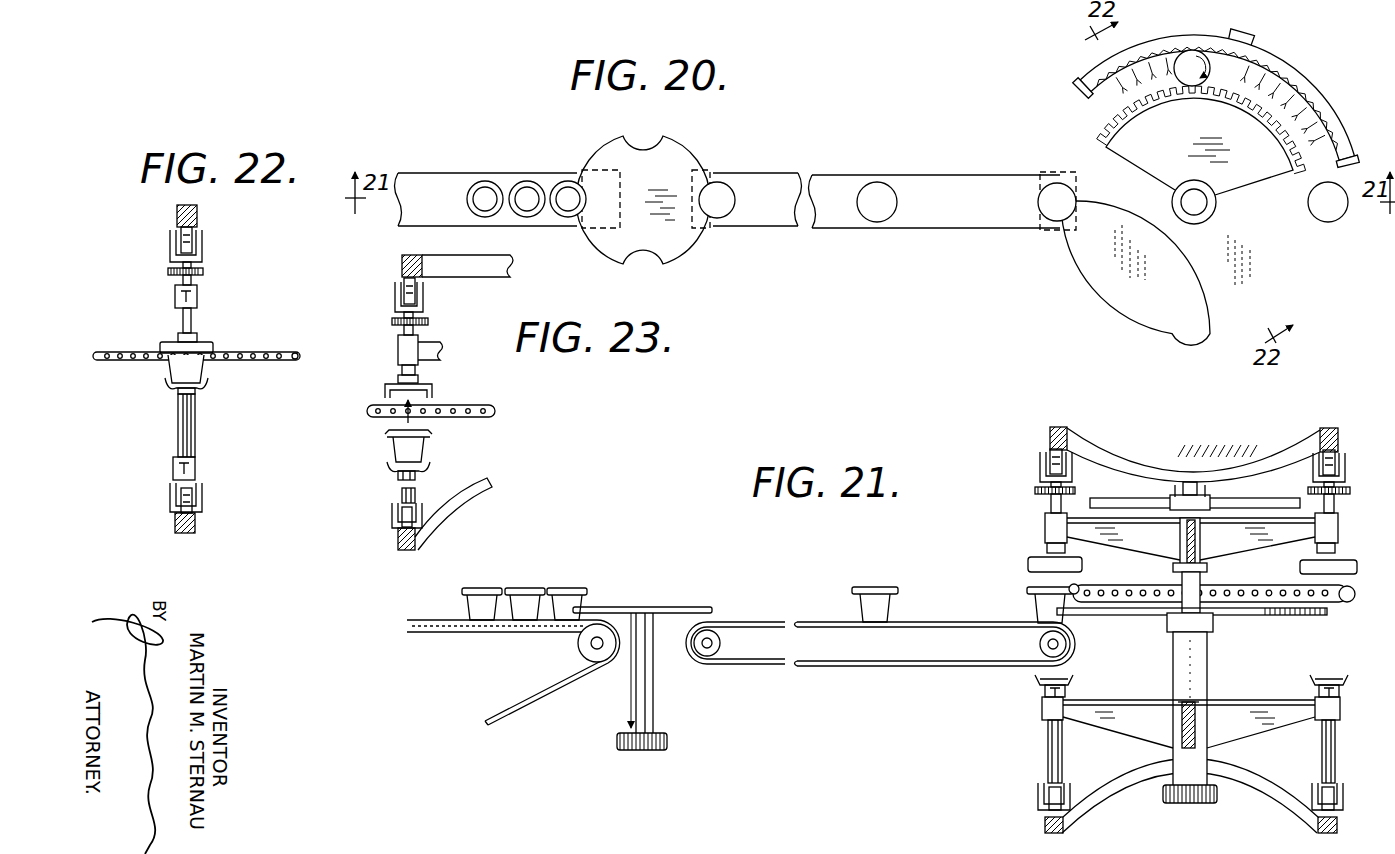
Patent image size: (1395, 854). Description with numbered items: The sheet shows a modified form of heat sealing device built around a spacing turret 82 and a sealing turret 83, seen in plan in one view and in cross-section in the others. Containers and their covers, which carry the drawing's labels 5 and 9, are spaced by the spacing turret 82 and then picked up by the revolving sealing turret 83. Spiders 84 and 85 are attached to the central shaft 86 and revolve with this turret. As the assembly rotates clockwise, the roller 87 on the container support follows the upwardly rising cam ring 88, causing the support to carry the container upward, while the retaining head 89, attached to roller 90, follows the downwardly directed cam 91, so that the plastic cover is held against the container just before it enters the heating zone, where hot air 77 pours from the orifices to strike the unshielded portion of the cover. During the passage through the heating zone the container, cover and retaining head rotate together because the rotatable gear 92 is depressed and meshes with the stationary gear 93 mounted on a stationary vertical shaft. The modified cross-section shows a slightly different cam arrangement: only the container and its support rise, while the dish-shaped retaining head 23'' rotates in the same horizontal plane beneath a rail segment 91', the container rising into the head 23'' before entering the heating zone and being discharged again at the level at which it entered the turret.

In FIG. 21, the container lid 5 is at (852, 590).
In FIG. 20, the container cup 9 is at (876, 190).
In FIG. 23, the container cup 9 is at (400, 451).
In FIG. 21, the container cup 9 is at (893, 606).
In FIG. 23, the dish-shaped retaining head 23'' is at (442, 385).
In FIG. 20, the hot air 77 is at (1328, 98).
In FIG. 22, the hot air 77 is at (298, 356).
In FIG. 23, the hot air 77 is at (472, 417).
In FIG. 21, the hot air 77 is at (1262, 592).
In FIG. 20, the spacing turret 82 is at (692, 150).
In FIG. 21, the spacing turret 82 is at (678, 607).
In FIG. 20, the sealing turret 83 is at (1127, 313).
In FIG. 21, the sealing turret 83 is at (1134, 613).
In FIG. 21, the spider 84 is at (1162, 734).
In FIG. 21, the spider 85 is at (1166, 551).
In FIG. 21, the central shaft 86 is at (1200, 665).
In FIG. 22, the roller 87 is at (199, 500).
In FIG. 23, the roller 87 is at (398, 535).
In FIG. 21, the roller 87 is at (1040, 800).
In FIG. 21, the cam ring 88 is at (1122, 783).
In FIG. 22, the retaining head 89 is at (207, 345).
In FIG. 21, the retaining head 89 is at (1030, 566).
In FIG. 22, the roller 90 is at (197, 240).
In FIG. 21, the roller 90 is at (1052, 466).
In FIG. 22, the cam 91 is at (162, 215).
In FIG. 21, the cam 91 is at (1194, 447).
In FIG. 23, the rail segment 91' is at (473, 281).
In FIG. 20, the rotatable gear 92 is at (1100, 110).
In FIG. 22, the rotatable gear 92 is at (203, 272).
In FIG. 23, the rotatable gear 92 is at (428, 321).
In FIG. 21, the rotatable gear 92 is at (1035, 490).
In FIG. 20, the stationary gear 93 is at (1172, 147).
In FIG. 21, the stationary gear 93 is at (1113, 500).